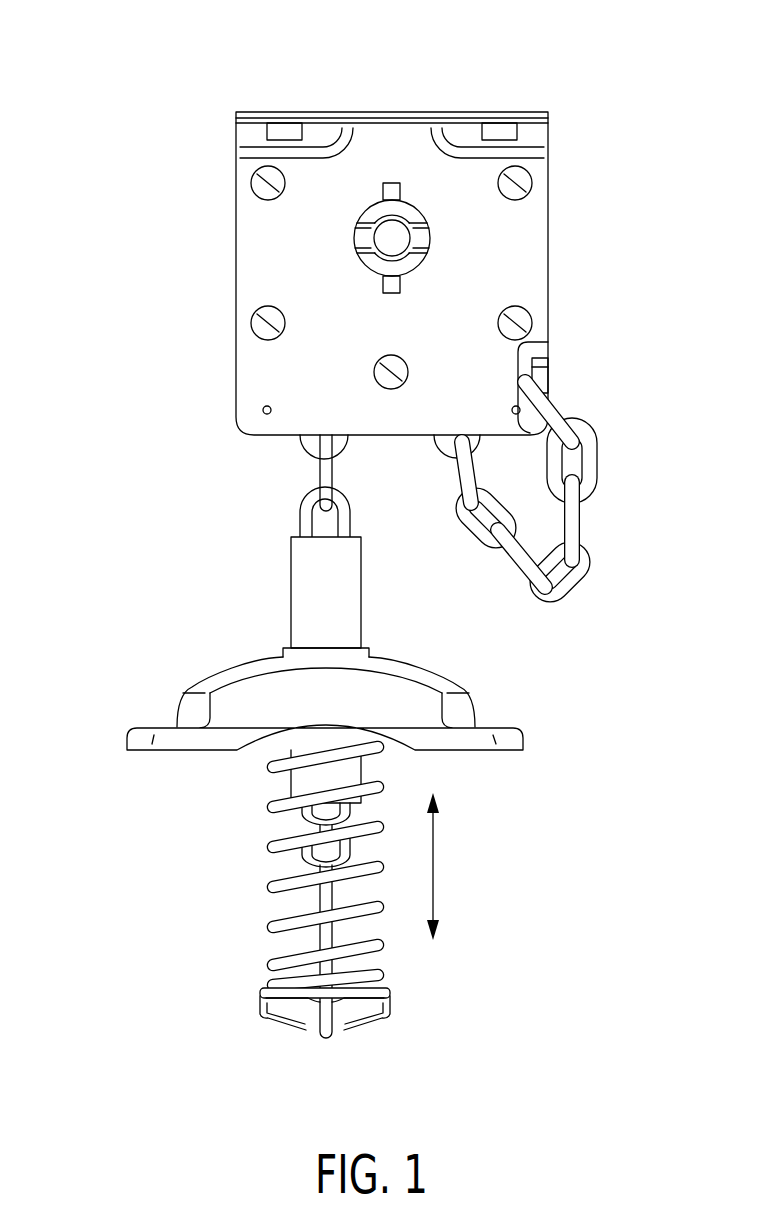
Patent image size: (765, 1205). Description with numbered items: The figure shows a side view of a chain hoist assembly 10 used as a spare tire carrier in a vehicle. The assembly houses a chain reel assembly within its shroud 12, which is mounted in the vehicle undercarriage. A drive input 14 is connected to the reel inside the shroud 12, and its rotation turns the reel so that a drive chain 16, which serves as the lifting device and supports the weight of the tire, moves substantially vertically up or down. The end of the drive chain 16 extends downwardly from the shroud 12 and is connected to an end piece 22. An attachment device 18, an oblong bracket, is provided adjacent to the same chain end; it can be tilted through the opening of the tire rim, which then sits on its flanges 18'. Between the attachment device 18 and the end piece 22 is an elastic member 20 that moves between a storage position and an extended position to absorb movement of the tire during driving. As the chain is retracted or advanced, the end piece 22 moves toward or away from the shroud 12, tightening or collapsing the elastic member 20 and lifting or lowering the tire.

The chain hoist assembly 10 is at (588, 74).
The shroud 12 is at (224, 229).
The drive input 14 is at (446, 240).
The drive chain 16 is at (593, 594).
The attachment device 18 is at (334, 843).
The flanges 18' is at (304, 703).
The elastic member 20 is at (236, 862).
The end piece 22 is at (363, 1030).